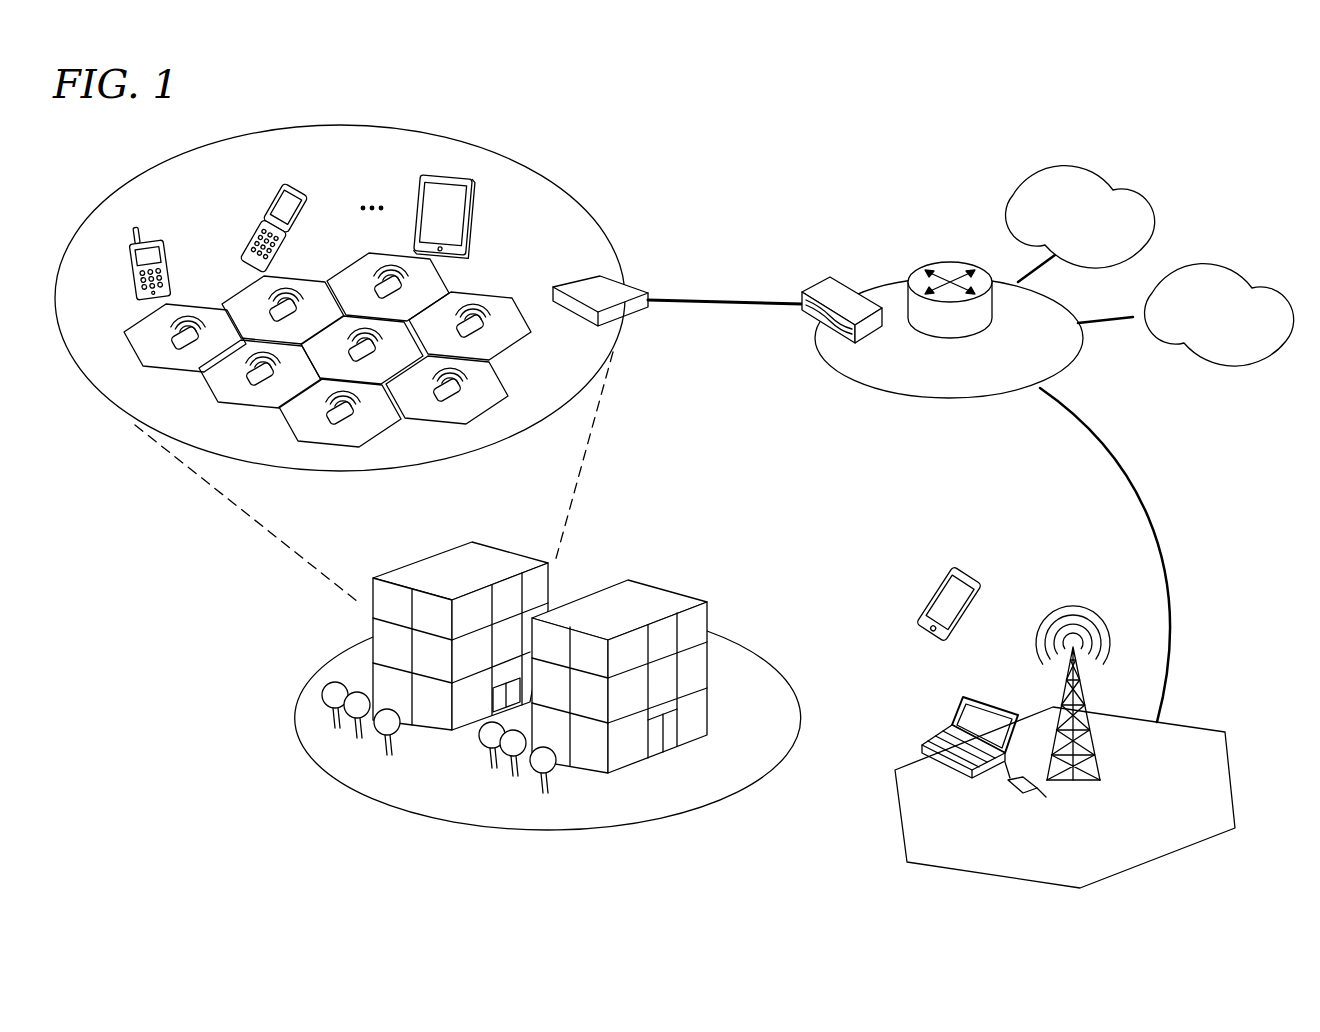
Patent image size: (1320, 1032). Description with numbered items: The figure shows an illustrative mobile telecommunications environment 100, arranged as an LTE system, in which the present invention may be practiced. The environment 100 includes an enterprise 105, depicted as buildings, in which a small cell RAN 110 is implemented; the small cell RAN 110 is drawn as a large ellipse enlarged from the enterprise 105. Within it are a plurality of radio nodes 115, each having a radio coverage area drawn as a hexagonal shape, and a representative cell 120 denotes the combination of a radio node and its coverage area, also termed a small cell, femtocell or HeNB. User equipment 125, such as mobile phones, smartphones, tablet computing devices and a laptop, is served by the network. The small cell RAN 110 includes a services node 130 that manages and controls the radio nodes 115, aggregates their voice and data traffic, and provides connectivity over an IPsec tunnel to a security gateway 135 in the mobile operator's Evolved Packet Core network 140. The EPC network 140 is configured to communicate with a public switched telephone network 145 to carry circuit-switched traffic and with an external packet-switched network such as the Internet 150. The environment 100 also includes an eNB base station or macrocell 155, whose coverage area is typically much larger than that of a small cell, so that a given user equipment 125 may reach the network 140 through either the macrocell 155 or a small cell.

The mobile telecommunications environment 100 is at (757, 168).
The enterprise 105 is at (296, 713).
The small cell RAN 110 is at (538, 170).
The radio nodes 115 is at (485, 328).
The cell 120 is at (495, 305).
The user equipment 125 is at (172, 255).
The services node 130 is at (640, 282).
The security gateway 135 is at (828, 287).
The Evolved Packet Core network 140 is at (940, 398).
The public switched telephone network 145 is at (1231, 265).
The Internet 150 is at (1040, 165).
The macrocell 155 is at (1211, 731).